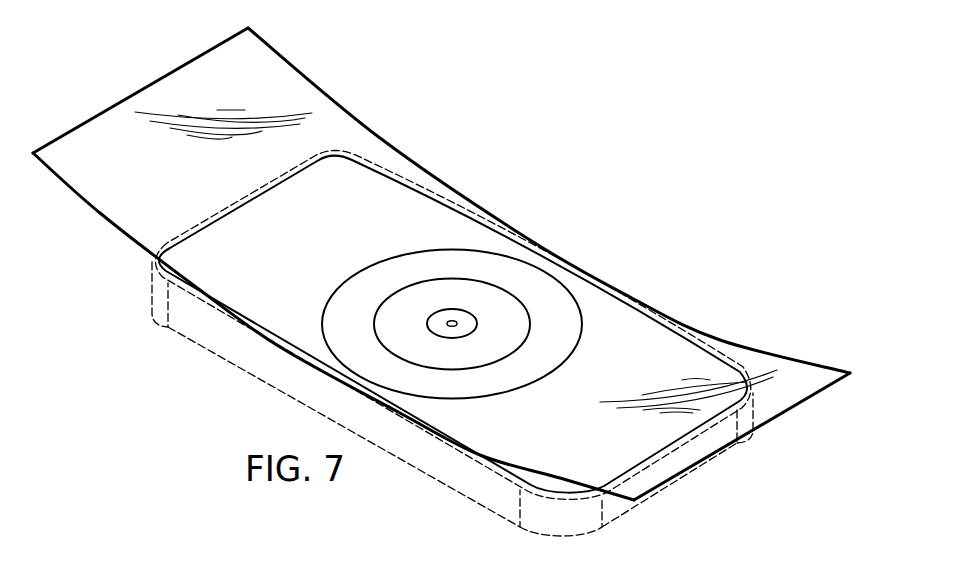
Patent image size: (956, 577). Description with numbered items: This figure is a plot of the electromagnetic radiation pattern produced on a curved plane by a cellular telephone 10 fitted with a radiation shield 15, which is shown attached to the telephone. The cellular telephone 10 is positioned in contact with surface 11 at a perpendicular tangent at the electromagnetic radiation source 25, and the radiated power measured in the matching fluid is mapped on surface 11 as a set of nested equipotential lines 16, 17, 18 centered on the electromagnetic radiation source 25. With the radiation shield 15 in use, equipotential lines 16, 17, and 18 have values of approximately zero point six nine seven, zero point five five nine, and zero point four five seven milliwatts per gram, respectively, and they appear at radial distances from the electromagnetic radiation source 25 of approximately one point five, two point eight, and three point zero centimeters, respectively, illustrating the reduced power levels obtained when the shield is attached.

The cellular telephone 10 is at (150, 287).
The surface 11 is at (800, 370).
The radiation shield 15 is at (543, 481).
The equipotential line 16 is at (463, 310).
The equipotential line 17 is at (382, 300).
The equipotential line 18 is at (385, 262).
The electromagnetic radiation source 25 is at (452, 312).